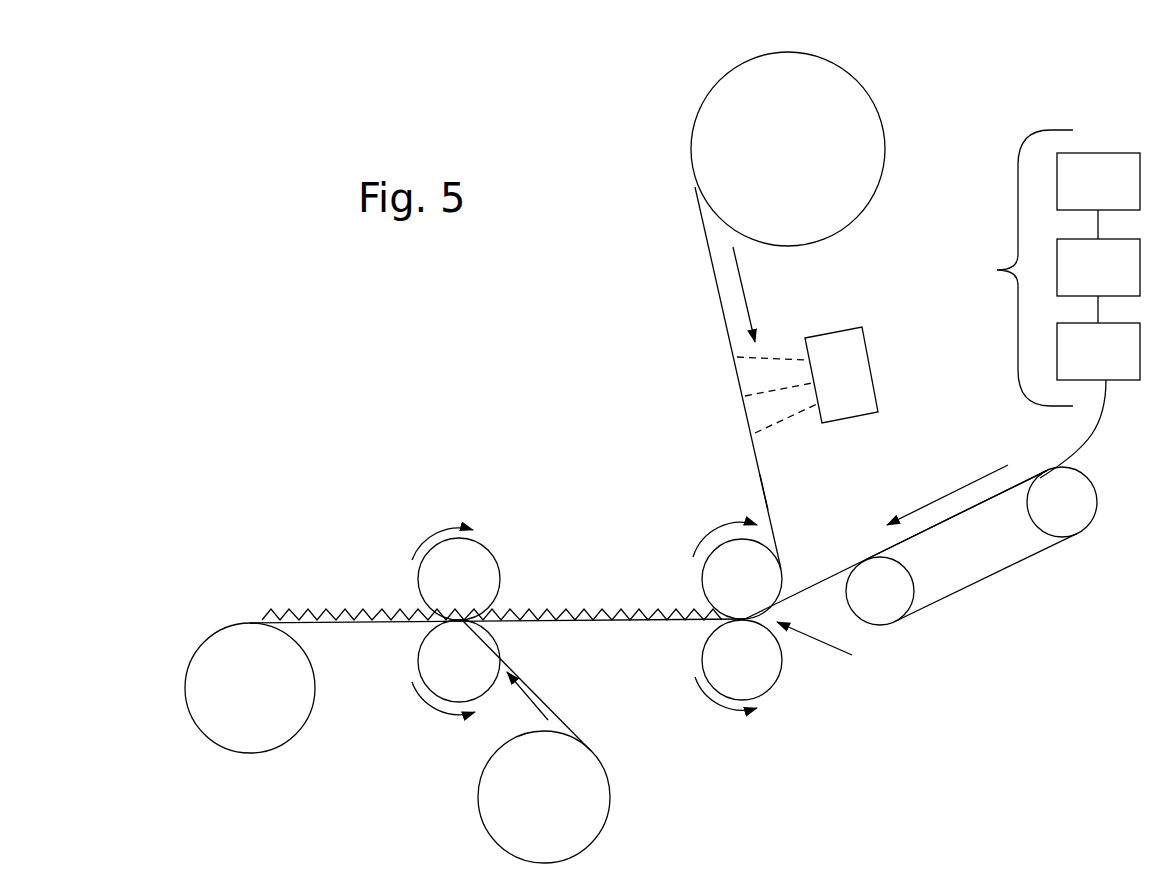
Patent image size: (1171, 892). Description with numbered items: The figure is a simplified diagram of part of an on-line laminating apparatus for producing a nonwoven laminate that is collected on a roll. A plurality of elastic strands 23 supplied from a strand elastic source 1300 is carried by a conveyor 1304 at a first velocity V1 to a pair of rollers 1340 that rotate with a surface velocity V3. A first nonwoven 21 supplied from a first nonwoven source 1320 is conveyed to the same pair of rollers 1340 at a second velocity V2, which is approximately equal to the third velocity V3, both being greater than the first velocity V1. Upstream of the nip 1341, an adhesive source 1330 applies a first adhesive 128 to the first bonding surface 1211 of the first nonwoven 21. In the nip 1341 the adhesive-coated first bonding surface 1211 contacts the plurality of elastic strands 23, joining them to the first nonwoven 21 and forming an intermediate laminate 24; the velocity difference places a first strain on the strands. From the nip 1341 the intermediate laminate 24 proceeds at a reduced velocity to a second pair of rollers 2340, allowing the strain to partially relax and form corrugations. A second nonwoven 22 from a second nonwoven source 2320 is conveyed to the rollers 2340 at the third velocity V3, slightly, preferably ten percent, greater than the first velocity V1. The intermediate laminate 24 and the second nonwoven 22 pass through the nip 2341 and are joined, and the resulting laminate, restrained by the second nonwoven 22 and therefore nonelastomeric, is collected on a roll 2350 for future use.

The first nonwoven source 1320 is at (852, 60).
The first nonwoven 21 is at (715, 273).
The first bonding surface 1211 is at (763, 480).
The second velocity V2 is at (742, 275).
The adhesive source 1330 is at (870, 363).
The first adhesive 128 is at (762, 358).
The strand elastic source 1300 is at (997, 270).
The first velocity V1 is at (932, 503).
The conveyor 1304 is at (988, 578).
The plurality of elastic strands 23 is at (808, 587).
The pair of rollers 1340 is at (773, 597).
The nip 1341 is at (845, 648).
The second pair of rollers 2340 is at (490, 597).
The third velocity V3 is at (691, 547).
The nip 2341 is at (502, 608).
The intermediate laminate 24 is at (627, 622).
The roll 2350 is at (276, 705).
The second nonwoven 22 is at (562, 718).
The second nonwoven source 2320 is at (571, 812).